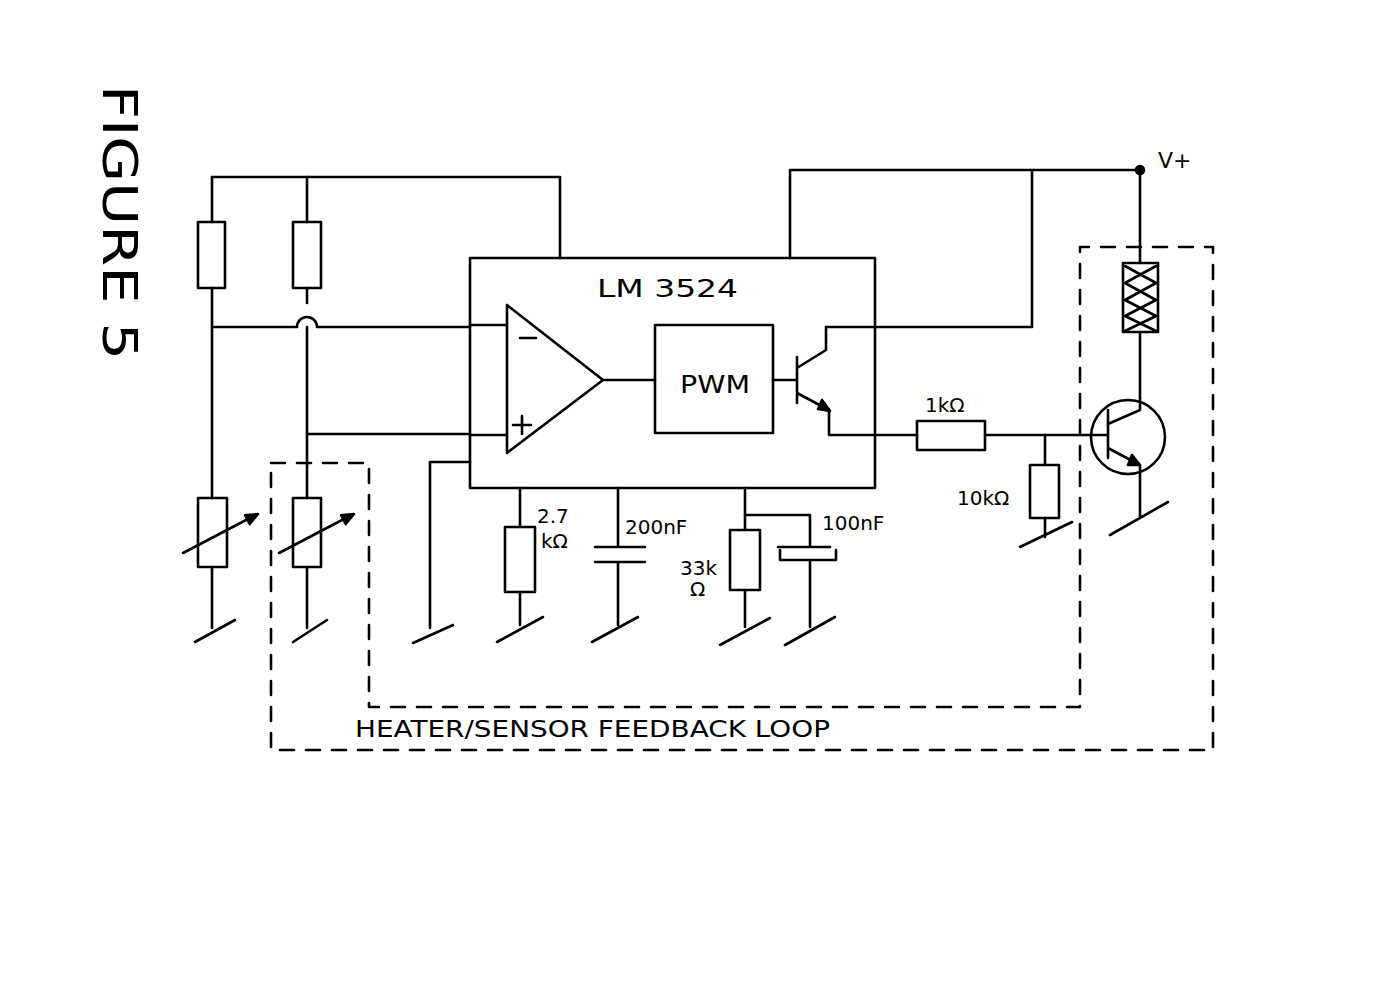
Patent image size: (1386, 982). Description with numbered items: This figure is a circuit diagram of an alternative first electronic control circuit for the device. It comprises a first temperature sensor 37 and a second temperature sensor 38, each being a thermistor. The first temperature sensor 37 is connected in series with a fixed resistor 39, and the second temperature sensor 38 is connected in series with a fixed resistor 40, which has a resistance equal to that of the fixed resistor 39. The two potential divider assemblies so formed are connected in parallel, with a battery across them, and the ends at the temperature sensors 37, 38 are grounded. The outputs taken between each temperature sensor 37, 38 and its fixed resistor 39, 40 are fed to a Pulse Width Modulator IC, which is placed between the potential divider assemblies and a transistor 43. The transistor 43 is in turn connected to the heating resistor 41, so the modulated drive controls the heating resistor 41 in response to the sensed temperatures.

The first temperature sensor 37 is at (208, 562).
The second temperature sensor 38 is at (302, 566).
The fixed resistor 39 is at (207, 268).
The fixed resistor 40 is at (300, 267).
The heating resistor 41 is at (1158, 313).
The transistor 43 is at (1165, 433).